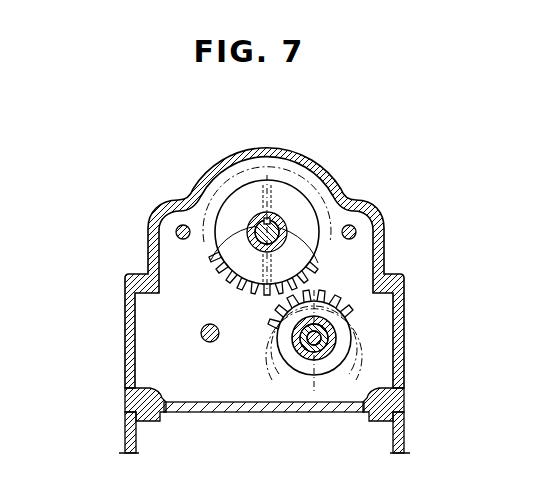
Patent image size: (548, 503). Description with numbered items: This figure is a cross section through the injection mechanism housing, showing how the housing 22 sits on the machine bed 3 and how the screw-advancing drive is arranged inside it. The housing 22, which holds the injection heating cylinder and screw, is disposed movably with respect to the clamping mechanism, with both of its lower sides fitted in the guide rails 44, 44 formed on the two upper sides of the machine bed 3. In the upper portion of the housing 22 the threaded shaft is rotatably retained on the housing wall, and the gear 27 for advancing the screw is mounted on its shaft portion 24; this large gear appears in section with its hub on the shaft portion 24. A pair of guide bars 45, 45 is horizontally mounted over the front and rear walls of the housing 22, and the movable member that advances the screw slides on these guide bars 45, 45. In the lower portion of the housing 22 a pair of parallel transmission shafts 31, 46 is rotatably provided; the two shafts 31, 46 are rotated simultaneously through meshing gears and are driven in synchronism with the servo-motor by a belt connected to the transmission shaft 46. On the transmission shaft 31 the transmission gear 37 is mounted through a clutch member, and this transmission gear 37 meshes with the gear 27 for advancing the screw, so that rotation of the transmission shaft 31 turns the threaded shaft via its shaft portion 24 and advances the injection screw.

The housing 22 is at (246, 151).
The shaft portion 24 is at (272, 222).
The gear for advancing the screw 27 is at (328, 197).
The guide bars 45 is at (176, 230).
The transmission gear 37 is at (347, 342).
The transmission shaft 31 is at (313, 352).
The guide rails 44 is at (142, 403).
The machine bed 3 is at (123, 435).
The transmission shaft 46 is at (209, 343).